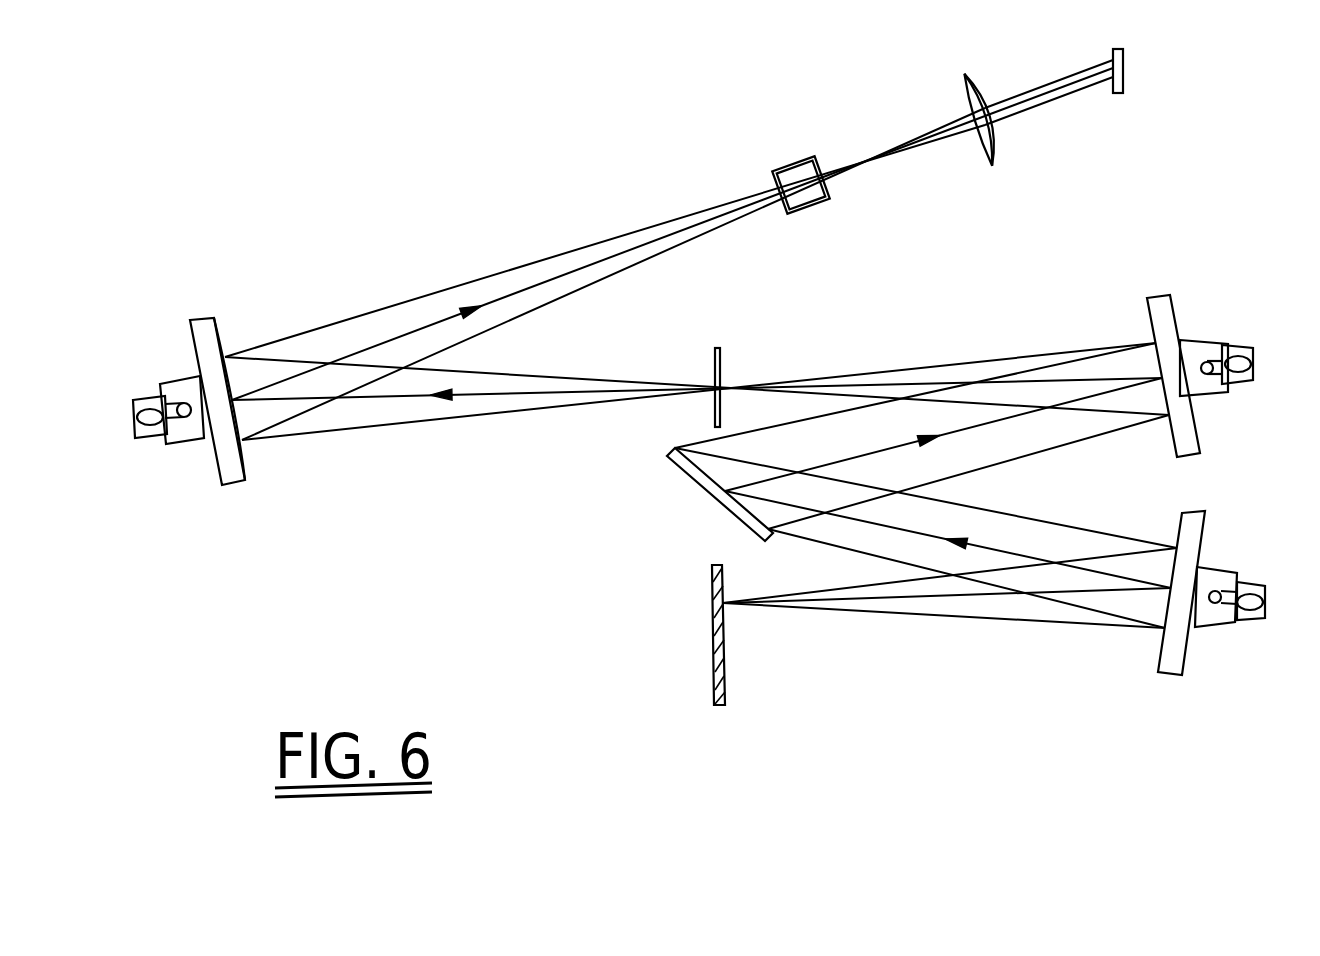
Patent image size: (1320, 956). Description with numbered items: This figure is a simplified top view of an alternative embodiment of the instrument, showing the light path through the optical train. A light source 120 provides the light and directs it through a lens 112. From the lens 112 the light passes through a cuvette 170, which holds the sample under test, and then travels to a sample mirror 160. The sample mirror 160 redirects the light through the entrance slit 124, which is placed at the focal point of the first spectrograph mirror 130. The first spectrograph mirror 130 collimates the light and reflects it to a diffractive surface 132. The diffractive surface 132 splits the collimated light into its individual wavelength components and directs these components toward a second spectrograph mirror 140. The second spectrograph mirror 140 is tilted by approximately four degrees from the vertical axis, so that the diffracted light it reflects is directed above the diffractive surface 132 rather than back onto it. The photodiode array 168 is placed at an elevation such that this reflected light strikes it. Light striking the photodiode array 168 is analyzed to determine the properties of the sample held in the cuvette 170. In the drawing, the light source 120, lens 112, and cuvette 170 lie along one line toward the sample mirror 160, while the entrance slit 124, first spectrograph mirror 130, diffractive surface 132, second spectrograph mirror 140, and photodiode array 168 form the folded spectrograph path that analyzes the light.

The lens 112 is at (985, 83).
The light source 120 is at (1122, 70).
The entrance slit 124 is at (722, 352).
The first spectrograph mirror 130 is at (1166, 313).
The diffractive surface 132 is at (712, 498).
The second spectrograph mirror 140 is at (1172, 654).
The sample mirror 160 is at (216, 330).
The photodiode array 168 is at (712, 628).
The cuvette 170 is at (800, 158).